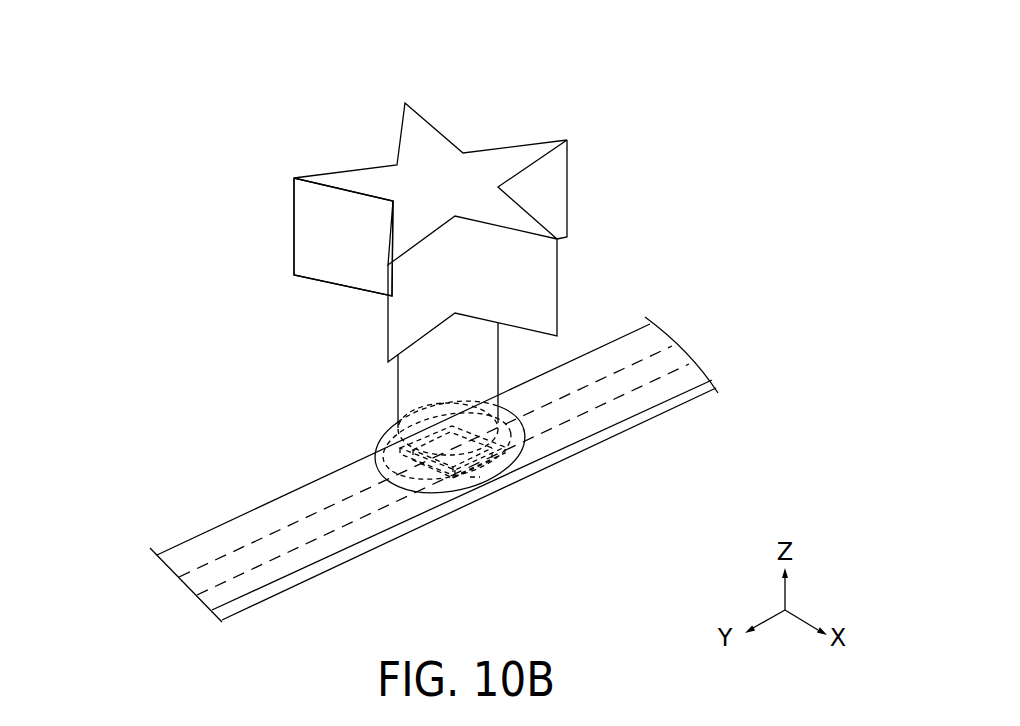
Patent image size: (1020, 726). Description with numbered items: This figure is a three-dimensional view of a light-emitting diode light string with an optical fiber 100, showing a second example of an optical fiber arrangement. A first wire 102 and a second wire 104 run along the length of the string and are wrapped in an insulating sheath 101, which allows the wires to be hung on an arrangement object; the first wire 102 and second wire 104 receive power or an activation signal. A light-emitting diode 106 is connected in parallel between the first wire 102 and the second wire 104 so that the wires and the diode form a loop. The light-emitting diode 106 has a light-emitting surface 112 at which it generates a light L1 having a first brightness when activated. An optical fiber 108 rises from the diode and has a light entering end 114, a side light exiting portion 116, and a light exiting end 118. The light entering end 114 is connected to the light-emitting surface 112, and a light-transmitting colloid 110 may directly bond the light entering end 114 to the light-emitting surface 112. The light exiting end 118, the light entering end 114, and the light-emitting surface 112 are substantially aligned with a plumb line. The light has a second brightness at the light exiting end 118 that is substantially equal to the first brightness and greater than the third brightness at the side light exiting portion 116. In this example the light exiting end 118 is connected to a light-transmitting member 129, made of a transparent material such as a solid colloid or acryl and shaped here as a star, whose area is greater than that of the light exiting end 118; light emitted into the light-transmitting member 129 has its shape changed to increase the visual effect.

The light-emitting diode light string with an optical fiber 100 is at (82, 128).
The insulating sheath 101 is at (675, 400).
The first wire 102 is at (243, 542).
The second wire 104 is at (262, 563).
The light-emitting diode 106 is at (423, 478).
The optical fiber 108 is at (573, 377).
The light-transmitting colloid 110 is at (390, 440).
The light-emitting surface 112 is at (425, 440).
The light entering end 114 is at (475, 488).
The side light exiting portion 116 is at (466, 349).
The light exiting end 118 is at (481, 174).
The light-transmitting member 129 is at (323, 203).